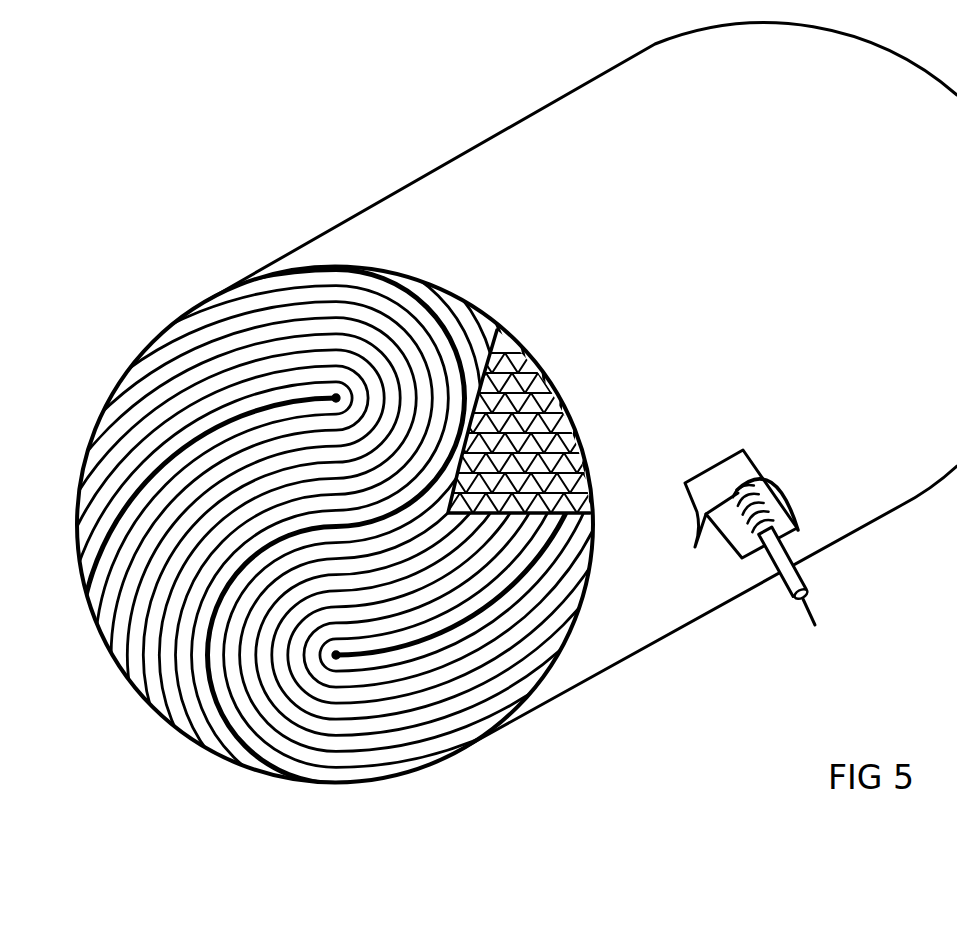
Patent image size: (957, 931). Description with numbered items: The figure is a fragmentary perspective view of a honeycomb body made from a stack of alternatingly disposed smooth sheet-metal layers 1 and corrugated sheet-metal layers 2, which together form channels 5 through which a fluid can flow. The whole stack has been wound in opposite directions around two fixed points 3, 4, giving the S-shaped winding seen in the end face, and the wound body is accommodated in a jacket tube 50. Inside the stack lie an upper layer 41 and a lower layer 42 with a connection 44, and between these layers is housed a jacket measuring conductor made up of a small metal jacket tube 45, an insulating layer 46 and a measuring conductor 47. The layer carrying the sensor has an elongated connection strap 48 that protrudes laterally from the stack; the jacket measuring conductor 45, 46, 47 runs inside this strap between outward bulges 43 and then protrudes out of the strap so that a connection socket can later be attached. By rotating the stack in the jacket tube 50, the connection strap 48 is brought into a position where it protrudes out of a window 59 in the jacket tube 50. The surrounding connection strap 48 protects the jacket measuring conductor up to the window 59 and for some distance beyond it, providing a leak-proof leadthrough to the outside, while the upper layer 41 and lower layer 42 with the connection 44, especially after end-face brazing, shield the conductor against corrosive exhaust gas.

The smooth sheet-metal layer 1 is at (552, 393).
The corrugated sheet-metal layer 2 is at (570, 433).
The fixed point 3 is at (334, 396).
The fixed point 4 is at (337, 660).
The channels 5 is at (590, 473).
The upper layer 41 is at (205, 692).
The lower layer 42 is at (417, 465).
The connection 44 is at (409, 465).
The outward bulges 43 is at (768, 525).
The small metal jacket tube 45 is at (798, 574).
The insulating layer 46 is at (800, 604).
The measuring conductor 47 is at (814, 613).
The connection strap 48 is at (785, 492).
The jacket tube 50 is at (392, 196).
The window 59 is at (722, 472).